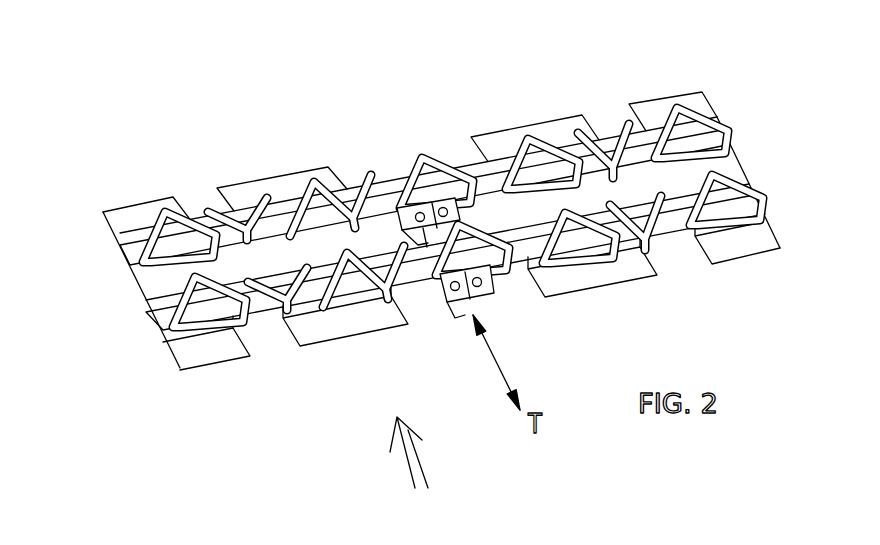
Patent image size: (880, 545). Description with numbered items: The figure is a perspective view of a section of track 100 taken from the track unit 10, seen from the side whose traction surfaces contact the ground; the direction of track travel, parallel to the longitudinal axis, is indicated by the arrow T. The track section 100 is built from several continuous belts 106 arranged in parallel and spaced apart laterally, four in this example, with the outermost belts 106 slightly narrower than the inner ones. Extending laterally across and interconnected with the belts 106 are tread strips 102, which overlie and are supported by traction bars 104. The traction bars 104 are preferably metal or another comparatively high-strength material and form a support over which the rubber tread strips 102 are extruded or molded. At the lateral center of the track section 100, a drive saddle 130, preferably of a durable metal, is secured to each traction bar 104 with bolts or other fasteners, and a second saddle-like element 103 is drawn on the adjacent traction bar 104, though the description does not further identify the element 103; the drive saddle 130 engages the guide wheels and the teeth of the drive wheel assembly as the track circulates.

The track section 100 is at (103, 73).
The tread strip 102 is at (190, 213).
The connector plate 103 is at (483, 292).
The traction bar 104 is at (118, 250).
The continuous belt 106 is at (107, 210).
The drive saddle 130 is at (388, 165).
The track unit 10 is at (416, 470).